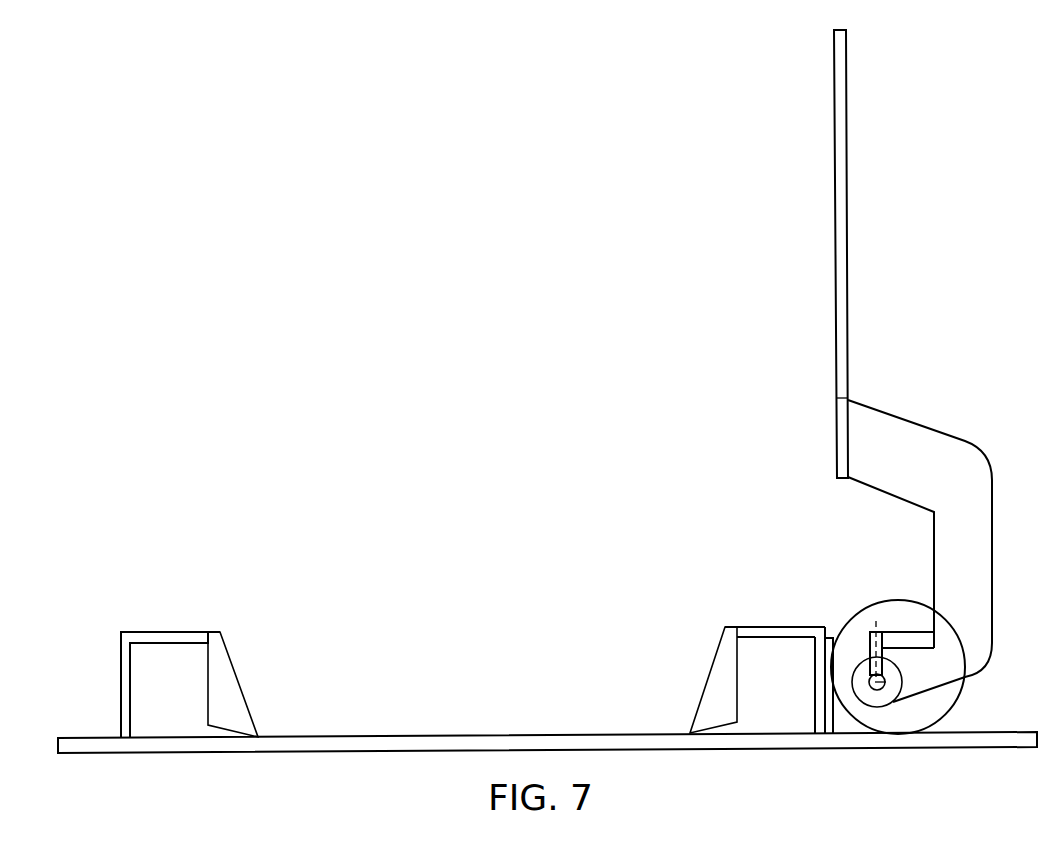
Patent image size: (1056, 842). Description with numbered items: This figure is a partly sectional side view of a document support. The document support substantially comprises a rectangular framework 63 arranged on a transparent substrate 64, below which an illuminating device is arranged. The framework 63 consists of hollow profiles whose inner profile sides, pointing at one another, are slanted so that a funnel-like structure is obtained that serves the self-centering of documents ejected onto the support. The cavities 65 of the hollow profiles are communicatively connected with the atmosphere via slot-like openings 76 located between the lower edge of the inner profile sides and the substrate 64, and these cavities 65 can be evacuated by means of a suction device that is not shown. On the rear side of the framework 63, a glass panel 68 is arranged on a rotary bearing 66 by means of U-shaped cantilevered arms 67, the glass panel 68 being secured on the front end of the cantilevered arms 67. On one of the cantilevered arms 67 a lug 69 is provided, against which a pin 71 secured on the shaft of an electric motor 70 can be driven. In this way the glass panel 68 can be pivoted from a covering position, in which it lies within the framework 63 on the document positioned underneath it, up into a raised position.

The rectangular framework 63 is at (160, 632).
The transparent substrate 64 is at (305, 752).
The cavities 65 is at (183, 690).
The rotary bearing 66 is at (885, 682).
The U-shaped cantilevered arms 67 is at (917, 432).
The glass panel 68 is at (840, 200).
The lug 69 is at (893, 635).
The electric motor 70 is at (872, 606).
The pin 71 is at (870, 638).
The slot-like openings 76 is at (258, 735).